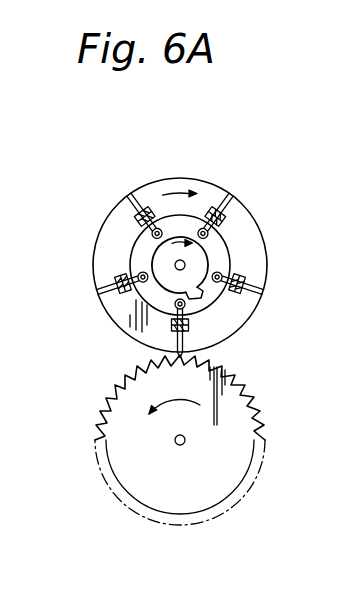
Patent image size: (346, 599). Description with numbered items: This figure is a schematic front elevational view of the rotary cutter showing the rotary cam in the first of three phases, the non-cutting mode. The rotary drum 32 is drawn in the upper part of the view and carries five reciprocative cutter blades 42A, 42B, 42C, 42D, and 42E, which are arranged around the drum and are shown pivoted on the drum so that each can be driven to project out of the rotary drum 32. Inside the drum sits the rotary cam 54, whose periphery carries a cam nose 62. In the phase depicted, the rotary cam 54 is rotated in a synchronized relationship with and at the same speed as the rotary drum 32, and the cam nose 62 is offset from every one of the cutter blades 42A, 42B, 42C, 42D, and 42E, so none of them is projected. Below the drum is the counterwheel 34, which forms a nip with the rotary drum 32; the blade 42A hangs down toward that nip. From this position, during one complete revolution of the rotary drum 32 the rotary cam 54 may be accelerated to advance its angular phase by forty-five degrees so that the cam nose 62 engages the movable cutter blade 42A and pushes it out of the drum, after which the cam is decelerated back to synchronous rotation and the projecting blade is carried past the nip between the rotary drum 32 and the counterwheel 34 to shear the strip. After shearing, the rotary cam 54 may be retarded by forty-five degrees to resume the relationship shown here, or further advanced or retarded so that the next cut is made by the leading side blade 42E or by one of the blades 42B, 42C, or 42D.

The rotary drum 32 is at (263, 232).
The rotary cam 54 is at (122, 258).
The cam nose 62 is at (204, 297).
The reciprocative cutter blade 42A is at (184, 343).
The reciprocative cutter blade 42B is at (264, 291).
The reciprocative cutter blade 42C is at (232, 195).
The reciprocative cutter blade 42D is at (131, 193).
The reciprocative cutter blade 42E is at (100, 292).
The counterwheel 34 is at (238, 463).